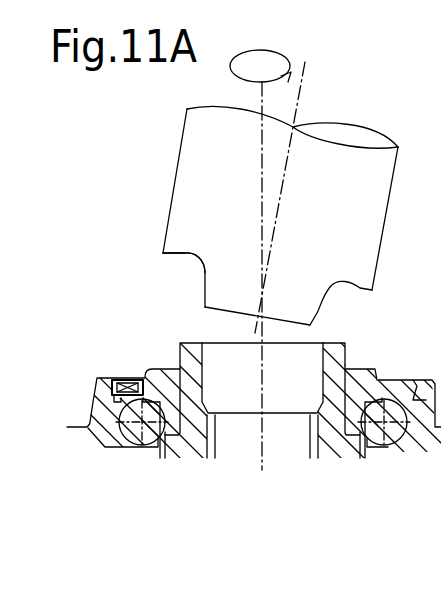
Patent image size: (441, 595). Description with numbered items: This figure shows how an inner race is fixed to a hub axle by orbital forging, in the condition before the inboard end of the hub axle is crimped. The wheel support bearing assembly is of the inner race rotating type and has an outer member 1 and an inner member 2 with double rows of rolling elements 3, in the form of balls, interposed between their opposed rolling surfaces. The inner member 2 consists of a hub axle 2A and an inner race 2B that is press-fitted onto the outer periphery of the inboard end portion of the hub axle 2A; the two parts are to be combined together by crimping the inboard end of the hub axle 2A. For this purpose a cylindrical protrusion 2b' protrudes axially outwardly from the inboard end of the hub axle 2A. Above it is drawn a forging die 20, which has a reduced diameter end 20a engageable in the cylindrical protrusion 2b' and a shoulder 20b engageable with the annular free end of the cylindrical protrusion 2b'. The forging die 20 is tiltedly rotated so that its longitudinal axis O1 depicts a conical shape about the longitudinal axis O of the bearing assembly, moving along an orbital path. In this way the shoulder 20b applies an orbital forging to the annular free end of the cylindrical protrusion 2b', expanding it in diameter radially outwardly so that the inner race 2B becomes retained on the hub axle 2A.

The outer member 1 is at (69, 419).
The inner member 2 is at (220, 439).
The hub axle 2A is at (220, 417).
The inner race 2B is at (163, 398).
The cylindrical protrusion 2b' is at (371, 336).
The rolling elements 3 is at (120, 439).
The forging die 20 is at (221, 187).
The reduced diameter end 20a is at (218, 290).
The shoulder 20b is at (182, 255).
The longitudinal axis of the bearing assembly O is at (262, 147).
The longitudinal axis of the forging die O1 is at (301, 104).